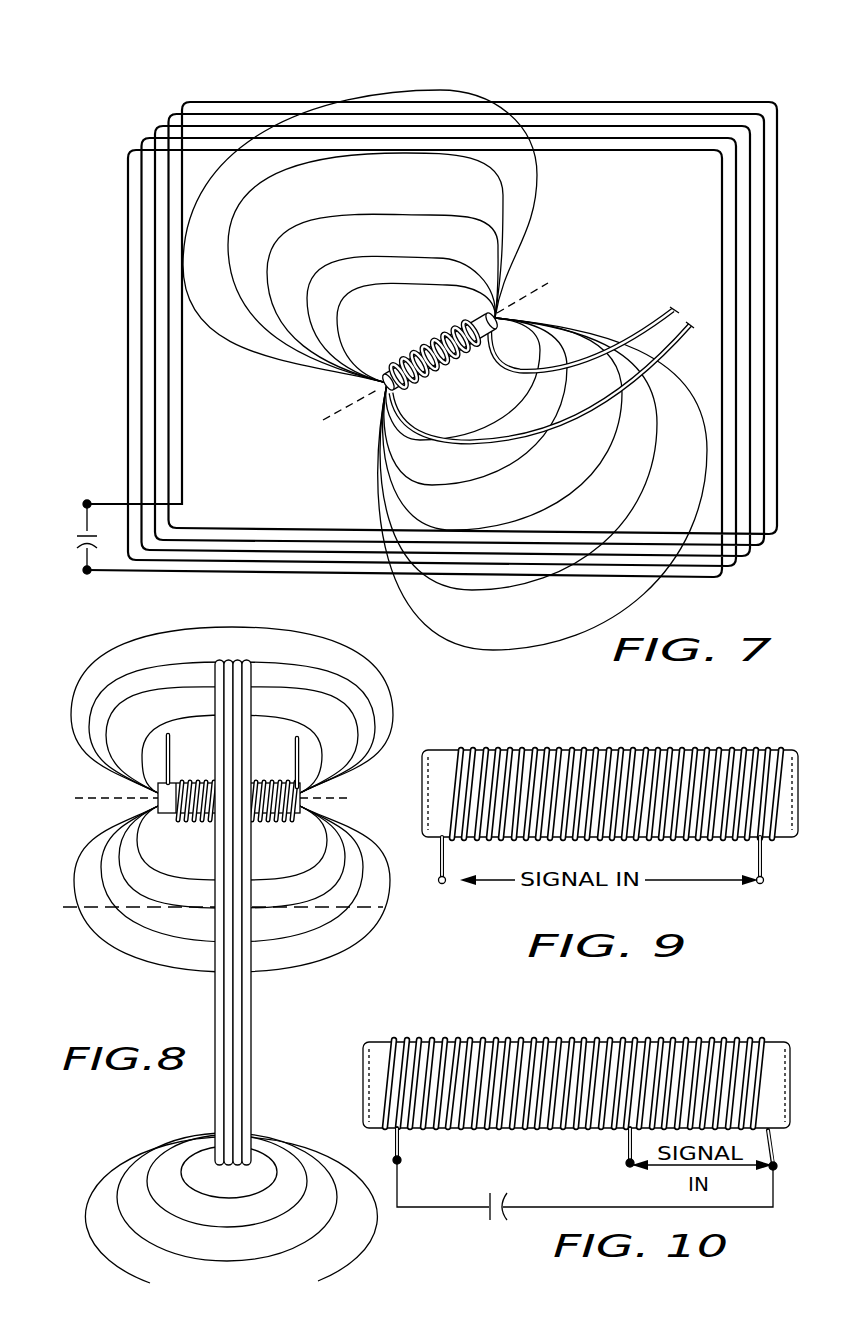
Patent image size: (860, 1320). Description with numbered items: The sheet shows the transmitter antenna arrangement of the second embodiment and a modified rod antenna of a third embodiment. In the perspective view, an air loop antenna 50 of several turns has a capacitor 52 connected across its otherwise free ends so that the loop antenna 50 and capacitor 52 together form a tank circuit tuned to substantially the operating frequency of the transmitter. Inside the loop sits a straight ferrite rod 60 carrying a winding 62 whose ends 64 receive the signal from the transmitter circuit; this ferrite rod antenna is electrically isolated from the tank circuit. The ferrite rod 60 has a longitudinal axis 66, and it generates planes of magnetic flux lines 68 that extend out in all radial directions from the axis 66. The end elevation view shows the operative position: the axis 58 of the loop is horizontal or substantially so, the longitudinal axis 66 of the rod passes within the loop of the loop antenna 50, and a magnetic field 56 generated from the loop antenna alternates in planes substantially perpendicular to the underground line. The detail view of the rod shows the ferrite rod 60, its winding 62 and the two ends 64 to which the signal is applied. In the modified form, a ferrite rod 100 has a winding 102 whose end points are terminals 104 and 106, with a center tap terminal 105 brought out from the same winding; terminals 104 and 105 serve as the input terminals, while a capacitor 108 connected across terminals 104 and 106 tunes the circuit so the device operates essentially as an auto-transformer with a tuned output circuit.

In FIG. 7, the loop antenna 50 is at (690, 161).
In FIG. 8, the loop antenna 50 is at (254, 1030).
In FIG. 7, the capacitor 52 is at (75, 528).
In FIG. 8, the magnetic field 56 is at (130, 1170).
In FIG. 8, the axis of the loop 58 is at (95, 910).
In FIG. 7, the ferrite rod 60 is at (480, 312).
In FIG. 8, the ferrite rod 60 is at (165, 815).
In FIG. 9, the ferrite rod 60 is at (441, 757).
In FIG. 7, the winding 62 is at (434, 339).
In FIG. 8, the winding 62 is at (272, 818).
In FIG. 9, the winding 62 is at (555, 745).
In FIG. 7, the ends 64 is at (673, 333).
In FIG. 8, the ends 64 is at (170, 728).
In FIG. 9, the ends 64 is at (447, 884).
In FIG. 7, the longitudinal axis 66 is at (323, 423).
In FIG. 8, the longitudinal axis 66 is at (100, 798).
In FIG. 7, the magnetic flux lines 68 is at (500, 242).
In FIG. 8, the magnetic flux lines 68 is at (172, 947).
In FIG. 10, the ferrite rod 100 is at (770, 1042).
In FIG. 10, the winding 102 is at (458, 1040).
In FIG. 10, the terminal 104 is at (770, 1170).
In FIG. 10, the center tap terminal 105 is at (627, 1166).
In FIG. 10, the terminal 106 is at (402, 1160).
In FIG. 10, the capacitor 108 is at (487, 1212).